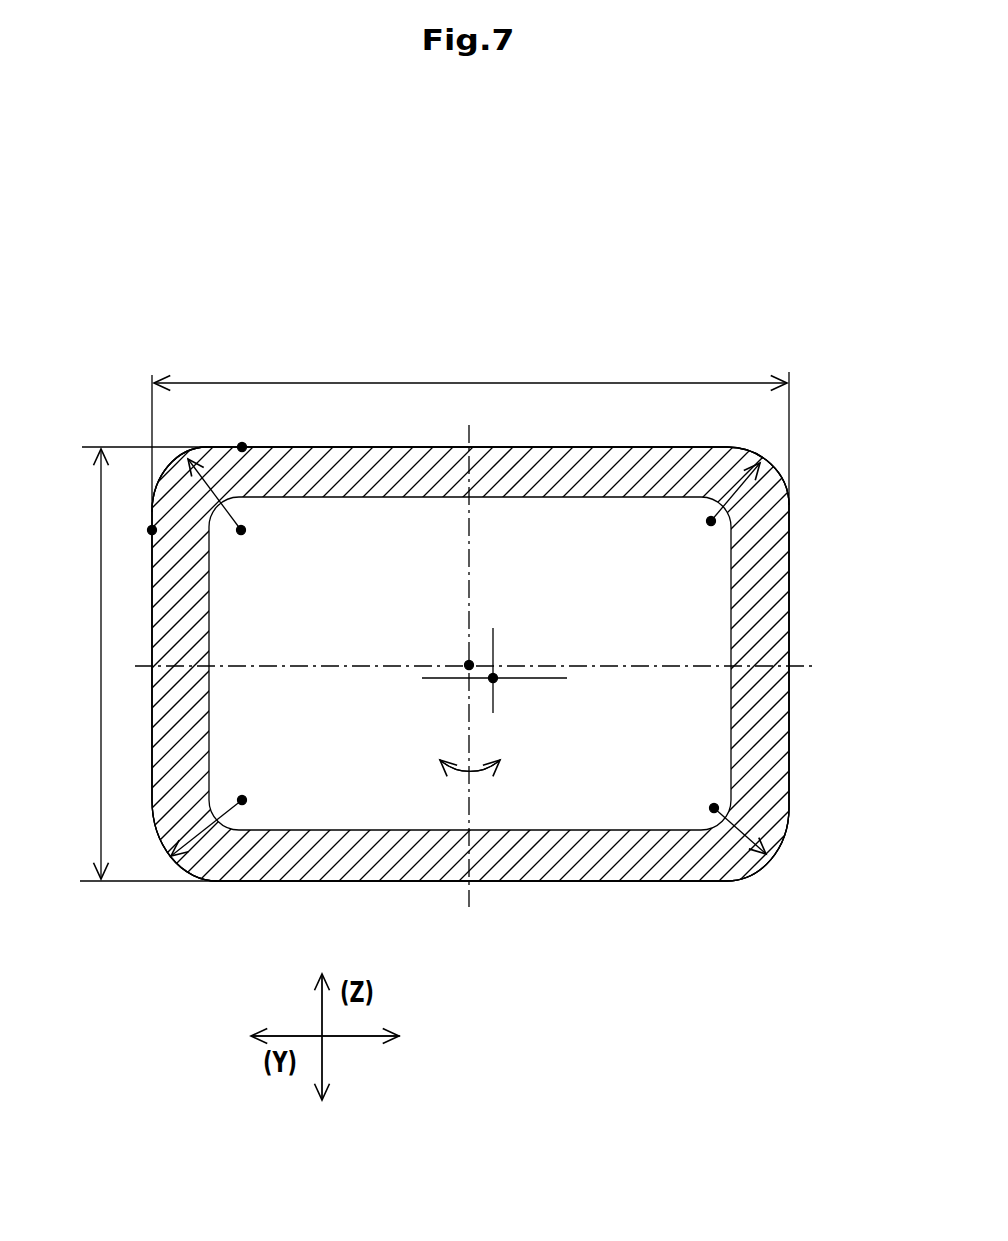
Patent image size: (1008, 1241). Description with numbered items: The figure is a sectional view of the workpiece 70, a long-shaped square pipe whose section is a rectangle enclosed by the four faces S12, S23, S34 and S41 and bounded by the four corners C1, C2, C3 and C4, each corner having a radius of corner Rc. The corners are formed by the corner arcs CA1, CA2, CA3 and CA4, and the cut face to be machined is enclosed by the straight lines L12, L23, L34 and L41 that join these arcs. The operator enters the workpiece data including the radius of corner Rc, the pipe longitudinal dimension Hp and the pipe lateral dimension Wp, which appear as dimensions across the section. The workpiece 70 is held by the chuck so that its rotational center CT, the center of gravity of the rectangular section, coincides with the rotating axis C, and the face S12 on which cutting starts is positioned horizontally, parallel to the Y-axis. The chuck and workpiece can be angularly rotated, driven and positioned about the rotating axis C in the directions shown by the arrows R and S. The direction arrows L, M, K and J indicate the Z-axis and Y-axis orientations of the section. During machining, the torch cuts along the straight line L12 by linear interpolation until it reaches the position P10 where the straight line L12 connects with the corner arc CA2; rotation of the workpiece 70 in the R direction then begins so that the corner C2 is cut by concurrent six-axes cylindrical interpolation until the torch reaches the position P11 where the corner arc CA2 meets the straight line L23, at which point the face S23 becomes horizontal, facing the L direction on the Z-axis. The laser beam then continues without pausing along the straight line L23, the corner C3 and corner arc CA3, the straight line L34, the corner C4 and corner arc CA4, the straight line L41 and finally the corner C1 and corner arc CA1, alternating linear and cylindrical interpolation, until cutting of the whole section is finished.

The workpiece 70 is at (208, 332).
The corner C1 is at (757, 441).
The corner C2 is at (142, 468).
The corner C3 is at (148, 903).
The corner C4 is at (777, 855).
The corner arc CA1 is at (760, 460).
The corner arc CA2 is at (170, 457).
The corner arc CA3 is at (187, 883).
The corner arc CA4 is at (755, 868).
The position P10 is at (257, 428).
The position P11 is at (128, 530).
The straight line L12 is at (352, 447).
The straight line L23 is at (150, 688).
The straight line L34 is at (503, 881).
The straight line L41 is at (789, 612).
The face S12 is at (612, 435).
The face S23 is at (147, 778).
The face S34 is at (583, 903).
The face S41 is at (798, 717).
The radius of corner Rc is at (467, 657).
The pipe lateral dimension Wp is at (470, 428).
The pipe longitudinal dimension Hp is at (139, 664).
The rotational center CT is at (466, 663).
The rotating axis C is at (495, 681).
The arrow direction R is at (456, 758).
The arrow direction S is at (482, 758).
The direction L is at (322, 1018).
The direction M is at (322, 1057).
The direction K is at (310, 1032).
The direction J is at (335, 1035).